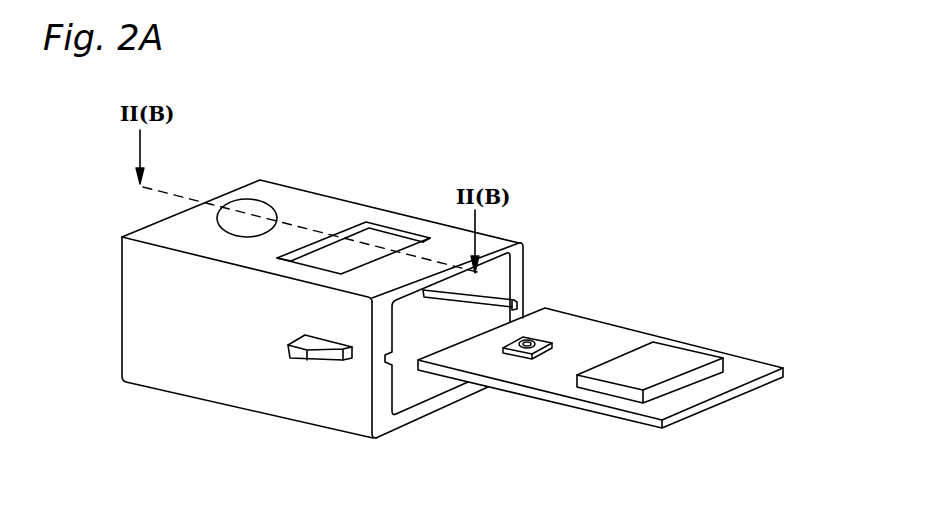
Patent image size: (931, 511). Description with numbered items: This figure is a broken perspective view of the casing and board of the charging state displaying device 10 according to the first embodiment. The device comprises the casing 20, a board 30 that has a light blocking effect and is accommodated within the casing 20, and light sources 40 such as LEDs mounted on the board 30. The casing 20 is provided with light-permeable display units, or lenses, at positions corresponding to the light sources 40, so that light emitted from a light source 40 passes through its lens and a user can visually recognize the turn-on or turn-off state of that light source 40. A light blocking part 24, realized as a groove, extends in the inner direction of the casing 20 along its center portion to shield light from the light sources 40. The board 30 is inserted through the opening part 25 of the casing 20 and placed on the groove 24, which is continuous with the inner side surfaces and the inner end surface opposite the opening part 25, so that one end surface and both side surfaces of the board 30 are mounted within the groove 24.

The charging state displaying device 10 is at (357, 187).
The casing 20 is at (198, 322).
The light blocking part 24 is at (387, 362).
The opening part 25 is at (500, 263).
The board 30 is at (633, 370).
The light source 40 is at (548, 342).